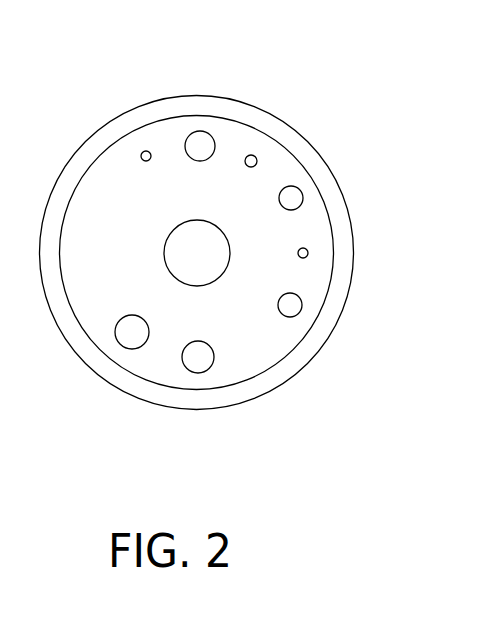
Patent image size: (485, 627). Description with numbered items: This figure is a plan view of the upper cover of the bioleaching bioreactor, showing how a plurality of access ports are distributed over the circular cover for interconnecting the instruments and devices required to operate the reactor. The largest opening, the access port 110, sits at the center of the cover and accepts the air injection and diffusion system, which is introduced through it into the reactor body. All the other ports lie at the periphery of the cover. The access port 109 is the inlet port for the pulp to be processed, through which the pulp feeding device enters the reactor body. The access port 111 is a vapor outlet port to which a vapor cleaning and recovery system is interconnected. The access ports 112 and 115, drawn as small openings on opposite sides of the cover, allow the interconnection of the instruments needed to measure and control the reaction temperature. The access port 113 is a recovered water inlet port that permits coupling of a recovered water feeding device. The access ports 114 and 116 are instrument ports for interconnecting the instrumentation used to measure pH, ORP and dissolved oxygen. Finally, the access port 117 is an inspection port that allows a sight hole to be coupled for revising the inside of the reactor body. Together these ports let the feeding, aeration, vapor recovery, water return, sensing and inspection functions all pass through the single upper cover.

The access port 109 is at (200, 143).
The access port 110 is at (183, 241).
The access port 111 is at (130, 331).
The access port 112 is at (146, 151).
The access port 113 is at (252, 160).
The access port 114 is at (297, 193).
The access port 115 is at (305, 253).
The access port 116 is at (292, 306).
The access port 117 is at (197, 358).